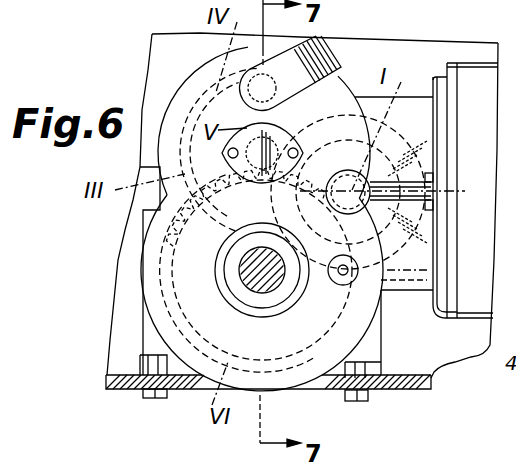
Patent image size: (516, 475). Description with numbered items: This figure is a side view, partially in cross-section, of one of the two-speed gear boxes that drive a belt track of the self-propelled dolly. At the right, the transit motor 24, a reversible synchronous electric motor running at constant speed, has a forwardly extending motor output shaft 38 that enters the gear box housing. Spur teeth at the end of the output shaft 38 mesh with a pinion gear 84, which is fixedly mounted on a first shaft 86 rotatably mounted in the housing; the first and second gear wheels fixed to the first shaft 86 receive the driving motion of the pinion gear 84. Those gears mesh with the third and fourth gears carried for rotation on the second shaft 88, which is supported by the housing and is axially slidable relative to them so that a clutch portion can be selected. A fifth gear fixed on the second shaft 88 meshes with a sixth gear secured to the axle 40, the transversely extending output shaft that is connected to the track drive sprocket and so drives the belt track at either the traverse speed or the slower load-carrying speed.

The axle 40 is at (238, 263).
The first shaft 86 is at (382, 160).
The second shaft 88 is at (348, 184).
The pinion gear 84 is at (400, 232).
The motor output shaft 38 is at (440, 173).
The transit motor 24 is at (486, 272).